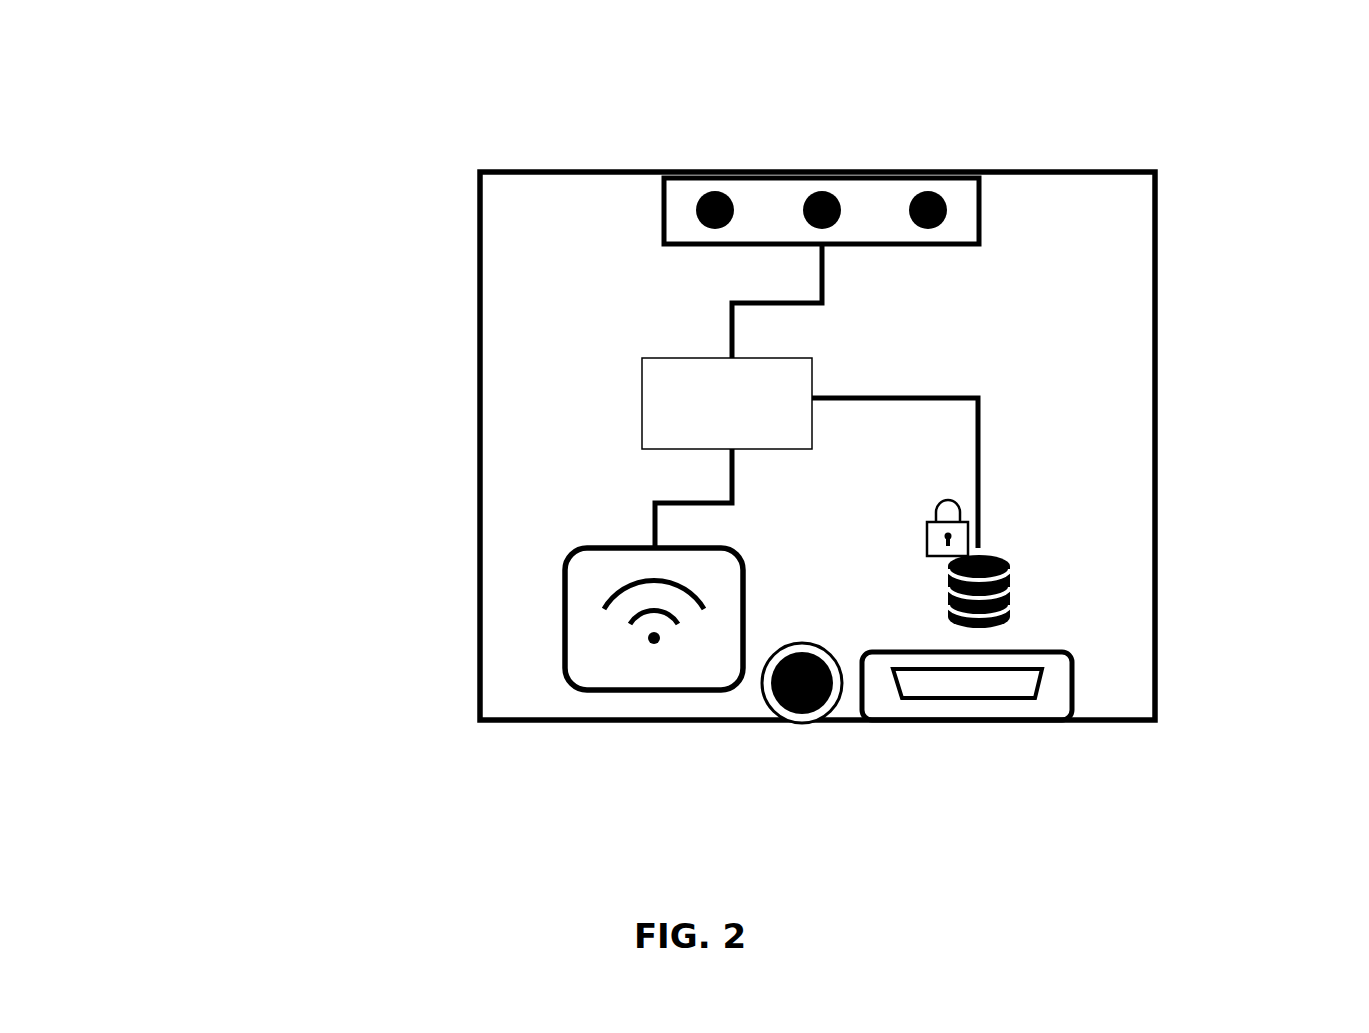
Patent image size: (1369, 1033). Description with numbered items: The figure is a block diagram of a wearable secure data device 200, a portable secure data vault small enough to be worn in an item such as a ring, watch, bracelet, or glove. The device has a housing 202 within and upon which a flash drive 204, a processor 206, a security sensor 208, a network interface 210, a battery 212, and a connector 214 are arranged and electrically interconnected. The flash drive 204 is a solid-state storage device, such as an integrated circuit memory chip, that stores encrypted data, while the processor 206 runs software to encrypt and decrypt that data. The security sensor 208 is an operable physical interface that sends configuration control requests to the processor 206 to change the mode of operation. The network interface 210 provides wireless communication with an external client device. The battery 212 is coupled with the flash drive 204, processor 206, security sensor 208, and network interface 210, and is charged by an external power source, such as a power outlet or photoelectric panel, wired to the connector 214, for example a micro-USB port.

The wearable secure data device 200 is at (150, 89).
The housing 202 is at (478, 207).
The flash drive 204 is at (1033, 588).
The processor 206 is at (637, 433).
The security sensor 208 is at (980, 210).
The network interface 210 is at (572, 640).
The battery 212 is at (780, 712).
The connector 214 is at (1077, 698).